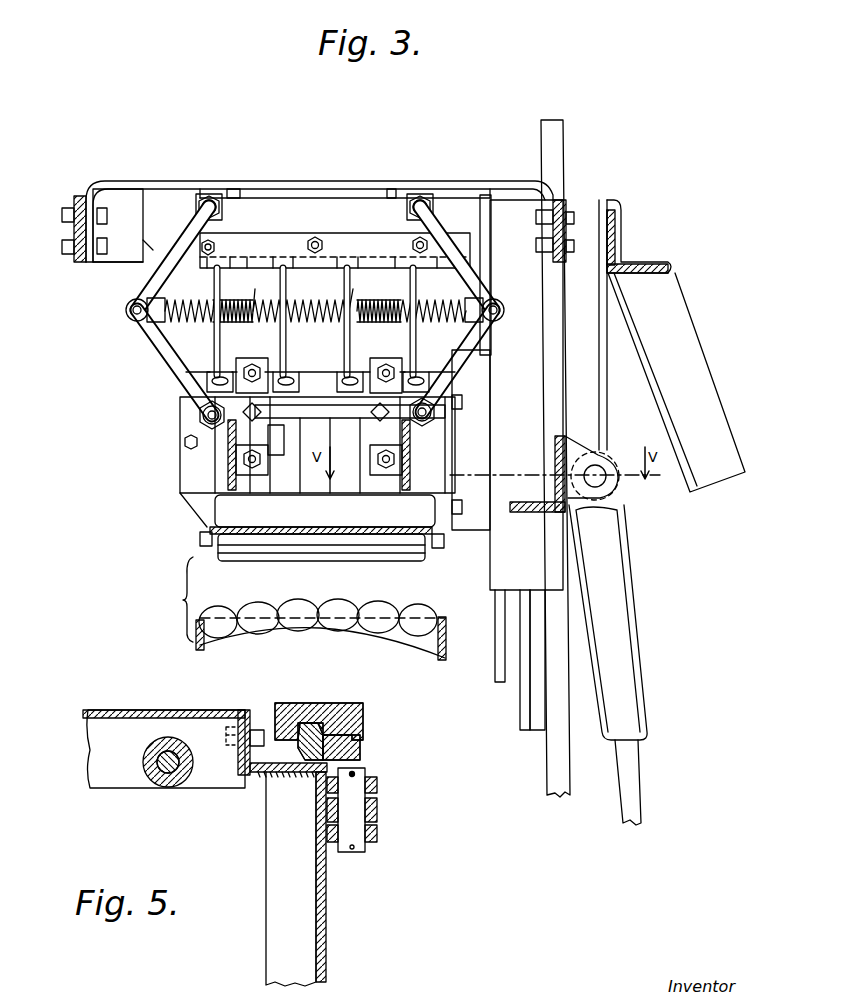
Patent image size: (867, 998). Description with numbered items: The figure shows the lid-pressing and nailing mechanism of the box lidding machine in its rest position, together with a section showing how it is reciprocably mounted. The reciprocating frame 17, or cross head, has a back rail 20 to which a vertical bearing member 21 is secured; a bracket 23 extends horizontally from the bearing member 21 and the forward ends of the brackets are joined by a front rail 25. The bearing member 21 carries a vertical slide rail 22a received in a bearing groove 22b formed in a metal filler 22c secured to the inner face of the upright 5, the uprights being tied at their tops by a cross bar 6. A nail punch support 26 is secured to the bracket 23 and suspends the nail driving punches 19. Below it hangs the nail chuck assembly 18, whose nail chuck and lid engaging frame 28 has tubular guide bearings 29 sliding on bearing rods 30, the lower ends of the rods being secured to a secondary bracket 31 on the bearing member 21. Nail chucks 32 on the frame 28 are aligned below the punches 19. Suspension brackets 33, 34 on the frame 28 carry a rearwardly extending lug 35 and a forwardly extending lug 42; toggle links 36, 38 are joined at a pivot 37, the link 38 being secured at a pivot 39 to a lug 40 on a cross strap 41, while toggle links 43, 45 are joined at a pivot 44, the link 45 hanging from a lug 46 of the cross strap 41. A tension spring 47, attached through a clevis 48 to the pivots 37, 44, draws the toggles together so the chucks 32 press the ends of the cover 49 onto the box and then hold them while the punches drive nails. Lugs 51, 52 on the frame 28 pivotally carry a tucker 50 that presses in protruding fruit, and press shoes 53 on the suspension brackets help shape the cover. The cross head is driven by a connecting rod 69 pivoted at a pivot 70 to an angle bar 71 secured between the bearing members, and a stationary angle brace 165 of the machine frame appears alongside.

In FIG. 3, the reciprocating frame 17 is at (74, 196).
In FIG. 3, the front rail 25 is at (62, 244).
In FIG. 3, the cross strap 41 is at (293, 186).
In FIG. 3, the bracket 23 is at (340, 196).
In FIG. 3, the nail punch support 26 is at (368, 245).
In FIG. 3, the lug 46 is at (198, 196).
In FIG. 3, the pivot 39 is at (424, 196).
In FIG. 3, the lug 40 is at (438, 192).
In FIG. 3, the toggle link 45 is at (182, 242).
In FIG. 3, the pivot point 44 is at (126, 318).
In FIG. 3, the toggle link 43 is at (168, 355).
In FIG. 3, the toggle link 36 is at (458, 365).
In FIG. 3, the toggle link 38 is at (466, 263).
In FIG. 3, the clevis 48 is at (130, 300).
In FIG. 3, the pivot 37 is at (500, 314).
In FIG. 3, the tension spring 47 is at (315, 317).
In FIG. 3, the tubular guide bearings 29 is at (240, 338).
In FIG. 3, the bearing rods 30 is at (232, 286).
In FIG. 3, the nail driving punches 19 is at (348, 285).
In FIG. 3, the nail chuck and lid engaging frame 28 is at (180, 465).
In FIG. 3, the nail chuck assembly 18 is at (205, 372).
In FIG. 3, the lug 42 is at (198, 413).
In FIG. 3, the lug 35 is at (434, 395).
In FIG. 3, the nail chucks 32 is at (290, 402).
In FIG. 3, the suspension bracket 34 is at (285, 440).
In FIG. 3, the suspension bracket 33 is at (372, 430).
In FIG. 3, the press shoes 53 is at (236, 487).
In FIG. 3, the secondary bracket 31 is at (475, 455).
In FIG. 5, the secondary bracket 31 is at (137, 710).
In FIG. 3, the cover 49 is at (332, 527).
In FIG. 3, the lug 52 is at (210, 530).
In FIG. 3, the lug 51 is at (444, 538).
In FIG. 3, the tucker 50 is at (310, 555).
In FIG. 3, the bearing member 21 is at (500, 568).
In FIG. 5, the bearing member 21 is at (258, 776).
In FIG. 3, the upright 5 is at (520, 702).
In FIG. 5, the upright 5 is at (355, 708).
In FIG. 3, the metal filler 22c is at (540, 735).
In FIG. 5, the metal filler 22c is at (365, 752).
In FIG. 3, the slide rail 22a is at (552, 778).
In FIG. 5, the slide rail 22a is at (307, 720).
In FIG. 3, the back rail 20 is at (565, 208).
In FIG. 3, the cross bar 6 is at (620, 225).
In FIG. 3, the angle brace 165 is at (688, 330).
In FIG. 3, the pivot 70 is at (608, 490).
In FIG. 5, the pivot 70 is at (357, 855).
In FIG. 3, the angle bar 71 is at (545, 505).
In FIG. 5, the angle bar 71 is at (326, 918).
In FIG. 3, the bearing grooves 22b is at (575, 685).
In FIG. 5, the bearing grooves 22b is at (360, 730).
In FIG. 3, the connecting rod 69 is at (635, 762).
In FIG. 5, the connecting rod 69 is at (380, 820).